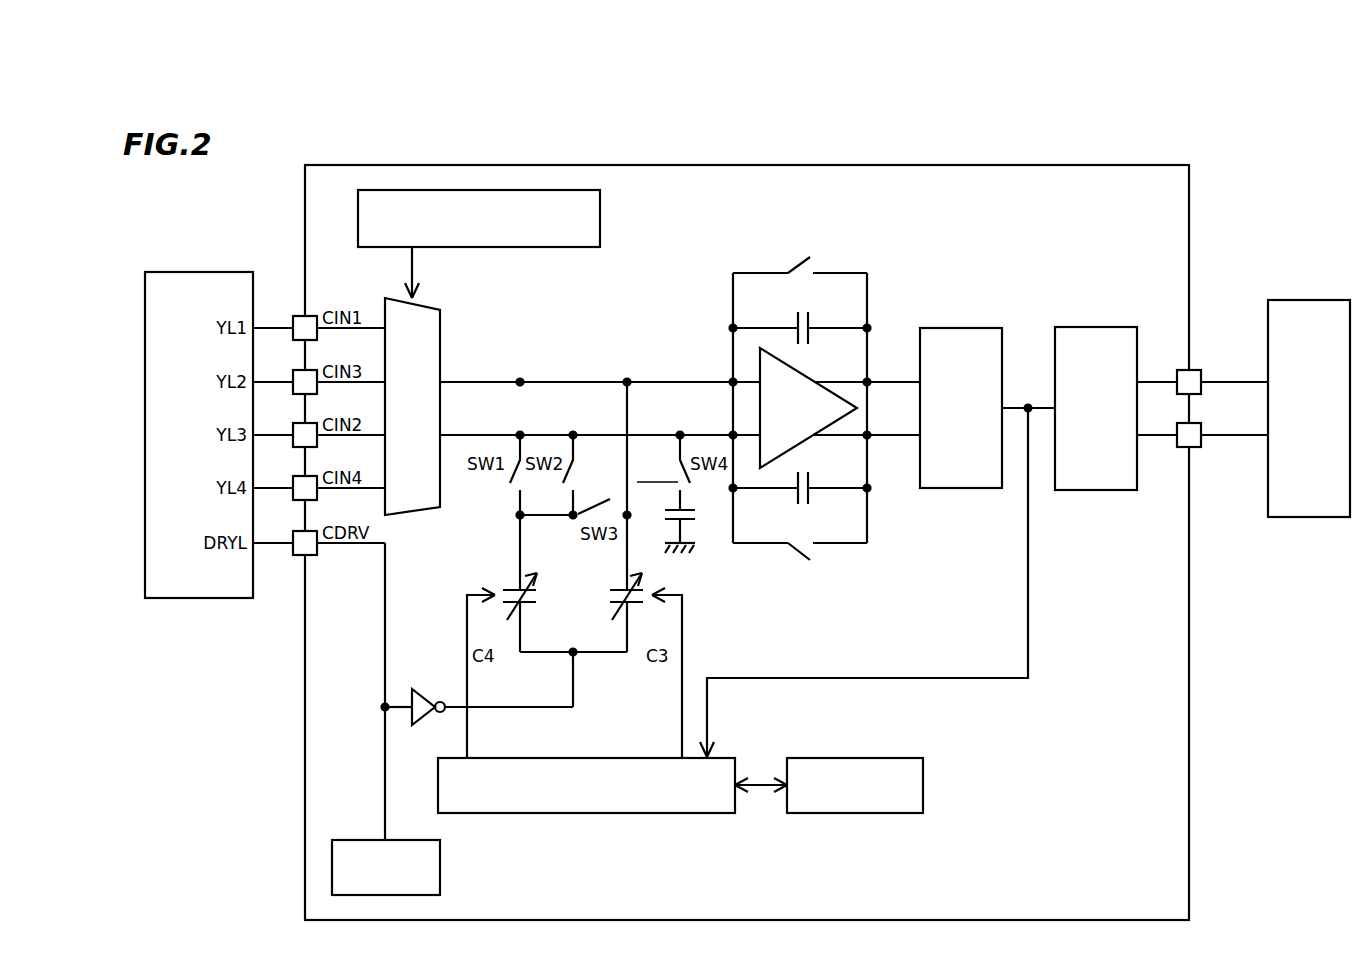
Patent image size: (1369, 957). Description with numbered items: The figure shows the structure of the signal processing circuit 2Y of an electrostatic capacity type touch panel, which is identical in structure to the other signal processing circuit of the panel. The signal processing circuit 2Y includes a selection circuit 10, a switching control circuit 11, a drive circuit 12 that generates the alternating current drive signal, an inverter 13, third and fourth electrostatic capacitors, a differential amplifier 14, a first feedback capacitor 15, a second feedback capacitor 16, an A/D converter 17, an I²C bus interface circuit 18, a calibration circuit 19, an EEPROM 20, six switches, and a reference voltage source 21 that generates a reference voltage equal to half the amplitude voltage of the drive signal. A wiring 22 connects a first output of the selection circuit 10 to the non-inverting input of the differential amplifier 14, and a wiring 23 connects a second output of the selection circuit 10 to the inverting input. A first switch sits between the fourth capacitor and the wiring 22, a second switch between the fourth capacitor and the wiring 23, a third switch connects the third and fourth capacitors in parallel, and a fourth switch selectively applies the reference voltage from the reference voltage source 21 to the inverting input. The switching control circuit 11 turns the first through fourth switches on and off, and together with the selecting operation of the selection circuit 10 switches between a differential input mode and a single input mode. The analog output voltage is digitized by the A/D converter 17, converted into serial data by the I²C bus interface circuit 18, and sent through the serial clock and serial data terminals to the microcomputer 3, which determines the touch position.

The signal processing circuit 2Y is at (186, 280).
The microcomputer 3 is at (1302, 300).
The selection circuit 10 is at (440, 352).
The switching control circuit 11 is at (600, 226).
The drive circuit 12 is at (440, 872).
The inverter 13 is at (430, 690).
The differential amplifier 14 is at (812, 378).
The first feedback capacitor 15 is at (848, 317).
The second feedback capacitor 16 is at (848, 507).
The A/D converter 17 is at (959, 327).
The I²C bus interface circuit 18 is at (1095, 327).
The calibration circuit 19 is at (632, 813).
The EEPROM 20 is at (855, 813).
The reference voltage source 21 is at (703, 530).
The wiring 22 is at (566, 380).
The wiring 23 is at (597, 433).